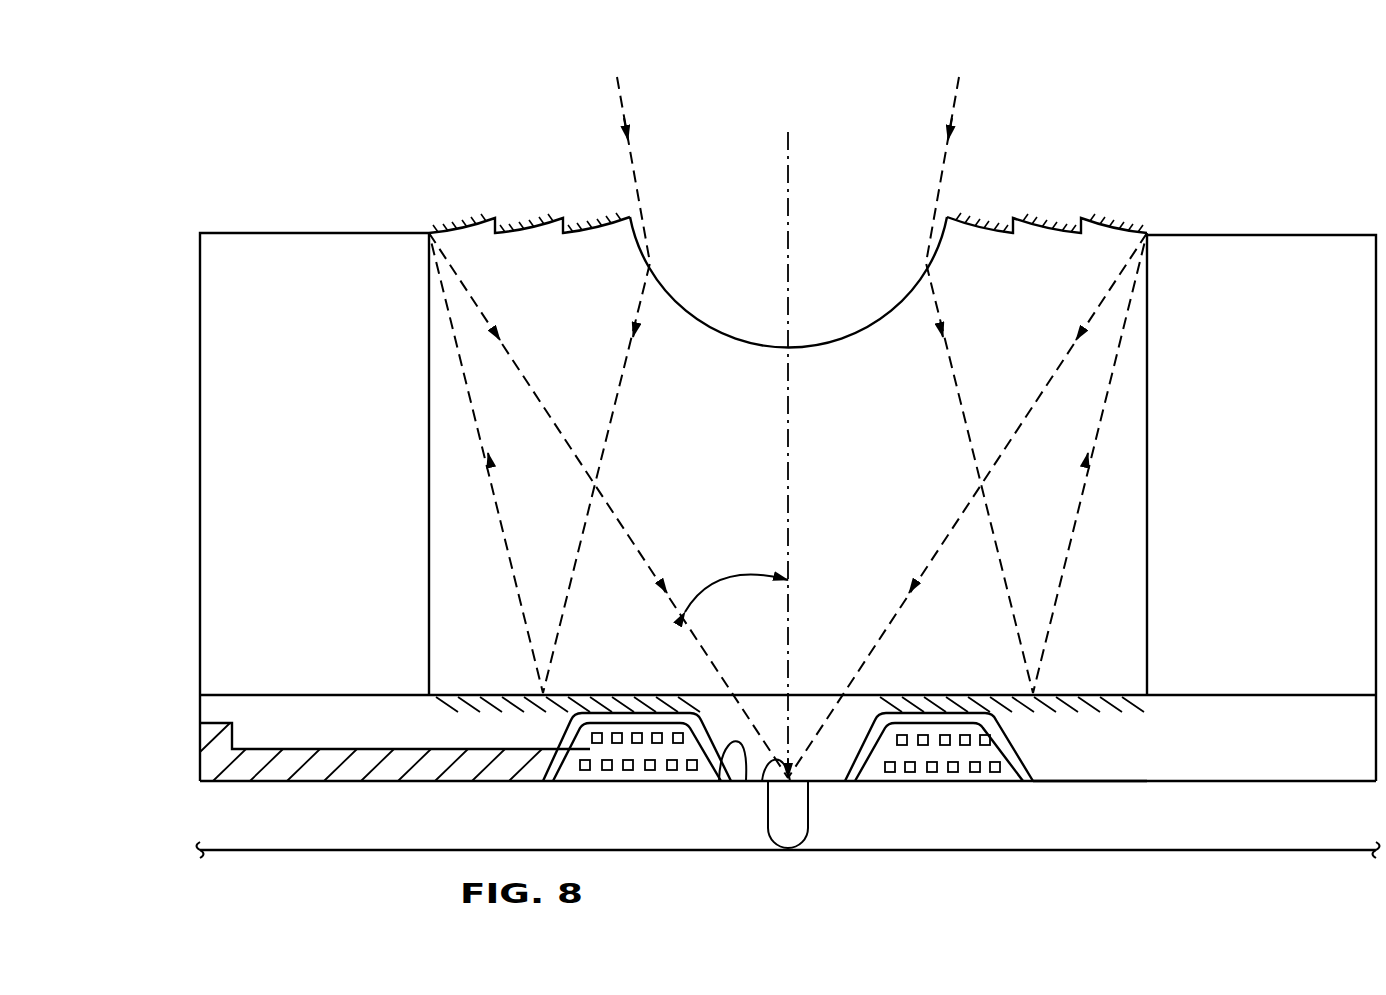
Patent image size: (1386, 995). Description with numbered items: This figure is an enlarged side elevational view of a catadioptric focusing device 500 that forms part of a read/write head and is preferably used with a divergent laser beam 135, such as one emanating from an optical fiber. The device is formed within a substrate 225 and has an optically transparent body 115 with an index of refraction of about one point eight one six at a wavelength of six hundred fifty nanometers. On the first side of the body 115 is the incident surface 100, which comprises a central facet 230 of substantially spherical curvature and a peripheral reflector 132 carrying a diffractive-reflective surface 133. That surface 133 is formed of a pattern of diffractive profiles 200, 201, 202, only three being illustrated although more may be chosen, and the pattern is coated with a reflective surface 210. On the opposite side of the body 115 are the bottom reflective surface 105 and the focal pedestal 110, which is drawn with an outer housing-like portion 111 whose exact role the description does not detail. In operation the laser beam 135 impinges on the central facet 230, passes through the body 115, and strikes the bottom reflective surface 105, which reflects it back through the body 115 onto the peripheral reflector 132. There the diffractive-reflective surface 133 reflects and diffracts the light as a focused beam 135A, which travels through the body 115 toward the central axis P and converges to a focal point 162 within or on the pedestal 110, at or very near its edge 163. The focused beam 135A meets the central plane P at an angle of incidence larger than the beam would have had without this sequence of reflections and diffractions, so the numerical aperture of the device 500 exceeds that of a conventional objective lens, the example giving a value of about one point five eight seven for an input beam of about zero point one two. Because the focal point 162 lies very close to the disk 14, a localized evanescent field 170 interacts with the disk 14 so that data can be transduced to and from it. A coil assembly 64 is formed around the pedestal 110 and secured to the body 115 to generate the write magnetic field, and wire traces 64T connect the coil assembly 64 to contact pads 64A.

The focusing device 500 is at (811, 83).
The central axis P is at (788, 165).
The incident surface 100 is at (750, 238).
The body 115 is at (448, 553).
The substrate 225 is at (1252, 247).
The diffractive profile 200 is at (432, 229).
The diffractive profile 201 is at (474, 218).
The diffractive profile 202 is at (588, 218).
The reflective surface 210 is at (993, 220).
The peripheral reflector 132 is at (1090, 203).
The diffractive-reflective surface 133 is at (1138, 222).
The central facet 230 is at (712, 318).
The laser beam 135 is at (622, 110).
The focused beam 135A is at (643, 540).
The bottom reflective surface 105 is at (423, 703).
The focal pedestal 110 is at (712, 687).
The module housing 111 is at (720, 777).
The coil assembly 64 is at (1033, 783).
The contact pads 64A is at (232, 738).
The wire traces 64T is at (380, 773).
The focal point 162 is at (743, 782).
The edge of the pedestal 163 is at (822, 781).
The evanescent field 170 is at (803, 838).
The disk 14 is at (905, 850).